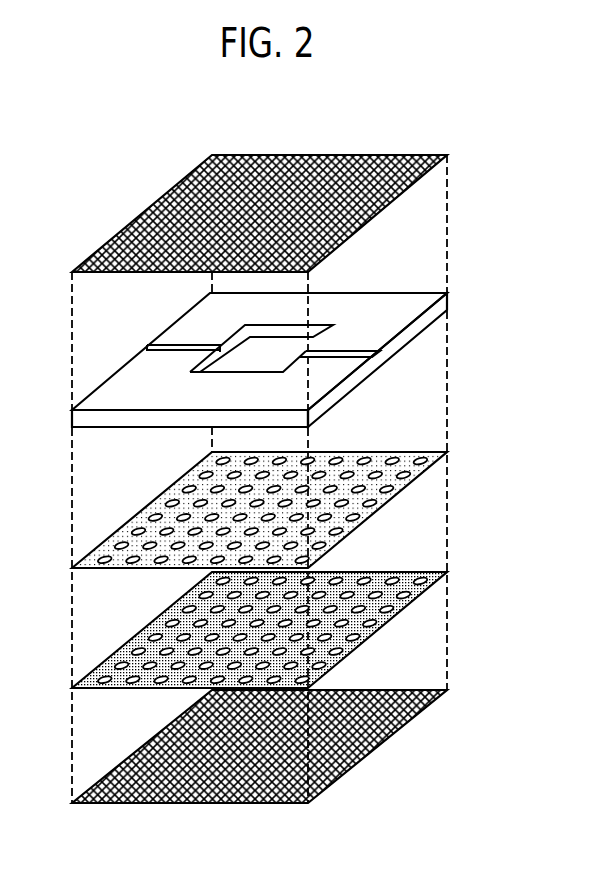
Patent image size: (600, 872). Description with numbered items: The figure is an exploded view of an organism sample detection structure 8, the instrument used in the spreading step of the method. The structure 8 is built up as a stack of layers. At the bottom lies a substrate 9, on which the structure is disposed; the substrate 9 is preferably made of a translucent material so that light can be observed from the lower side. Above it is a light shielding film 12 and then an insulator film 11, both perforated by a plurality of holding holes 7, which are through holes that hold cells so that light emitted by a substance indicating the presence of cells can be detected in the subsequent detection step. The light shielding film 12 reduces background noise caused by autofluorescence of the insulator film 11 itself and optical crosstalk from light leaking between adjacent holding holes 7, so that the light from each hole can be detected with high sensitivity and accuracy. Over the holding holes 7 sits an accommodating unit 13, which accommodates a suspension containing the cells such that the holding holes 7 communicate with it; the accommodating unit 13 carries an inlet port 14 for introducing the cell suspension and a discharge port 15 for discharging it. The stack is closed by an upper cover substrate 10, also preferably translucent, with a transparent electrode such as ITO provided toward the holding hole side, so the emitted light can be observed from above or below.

The organism sample detection structure 8 is at (254, 451).
The upper cover substrate 10 is at (192, 204).
The accommodating unit 13 is at (123, 388).
The inlet port 14 is at (182, 337).
The discharge port 15 is at (364, 342).
The holding holes 7 is at (372, 446).
The insulator film 11 is at (259, 480).
The light shielding film 12 is at (132, 630).
The substrate 9 is at (130, 775).